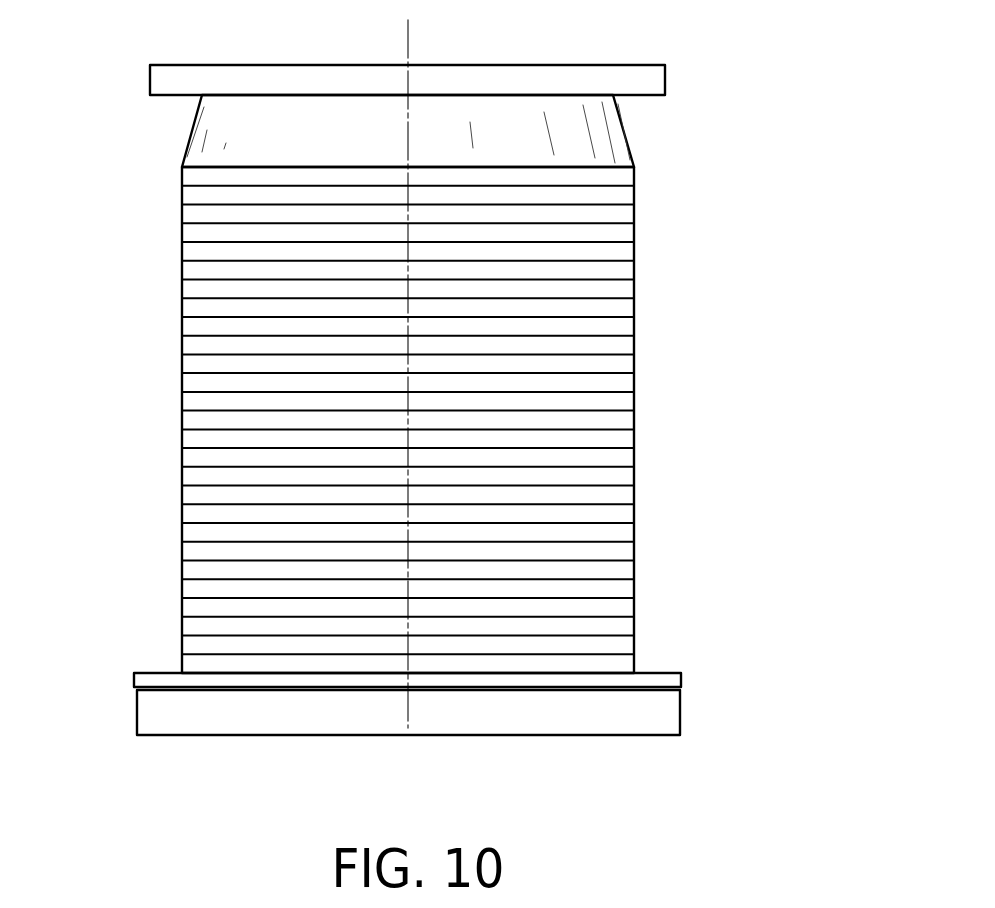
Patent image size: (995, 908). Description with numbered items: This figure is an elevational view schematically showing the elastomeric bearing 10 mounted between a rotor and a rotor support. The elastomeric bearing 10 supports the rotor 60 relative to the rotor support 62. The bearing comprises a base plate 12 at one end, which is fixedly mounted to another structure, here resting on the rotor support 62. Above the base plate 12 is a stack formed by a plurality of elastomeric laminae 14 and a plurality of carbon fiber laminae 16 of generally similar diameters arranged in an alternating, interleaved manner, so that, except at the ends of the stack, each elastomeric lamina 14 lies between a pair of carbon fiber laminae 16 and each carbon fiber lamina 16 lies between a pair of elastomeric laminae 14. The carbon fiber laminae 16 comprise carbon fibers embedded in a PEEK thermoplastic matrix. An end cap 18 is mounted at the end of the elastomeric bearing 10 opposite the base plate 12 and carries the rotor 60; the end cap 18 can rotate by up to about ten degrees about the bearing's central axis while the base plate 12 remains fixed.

The elastomeric bearing 10 is at (138, 243).
The base plate 12 is at (143, 672).
The elastomeric laminae 14 is at (188, 658).
The carbon fiber laminae 16 is at (625, 568).
The end cap 18 is at (610, 121).
The rotor 60 is at (653, 83).
The rotor support 62 is at (662, 710).